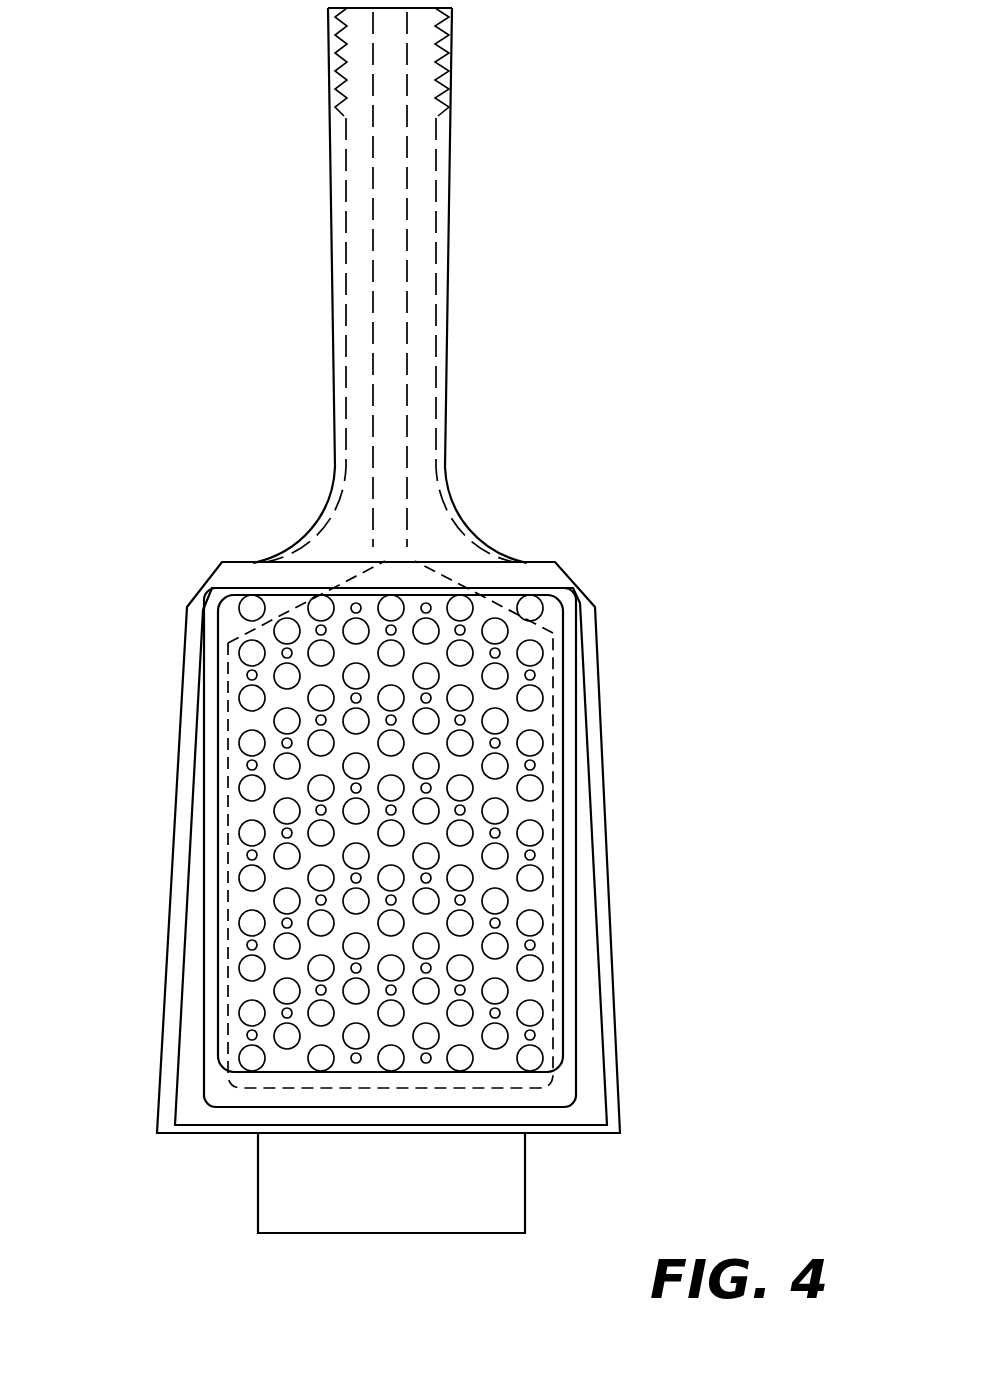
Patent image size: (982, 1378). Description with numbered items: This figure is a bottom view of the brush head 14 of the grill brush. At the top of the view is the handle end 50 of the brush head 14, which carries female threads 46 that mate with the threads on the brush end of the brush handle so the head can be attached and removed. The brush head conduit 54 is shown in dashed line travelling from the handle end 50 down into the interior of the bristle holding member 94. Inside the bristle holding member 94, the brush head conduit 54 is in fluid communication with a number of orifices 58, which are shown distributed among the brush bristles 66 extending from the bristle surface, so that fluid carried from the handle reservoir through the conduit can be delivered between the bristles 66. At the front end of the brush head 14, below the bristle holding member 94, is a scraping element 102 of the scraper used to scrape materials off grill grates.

The brush head 14 is at (470, 528).
The female threads 46 is at (337, 52).
The handle end 50 is at (420, 0).
The brush head conduit 54 is at (393, 291).
The orifices 58 is at (460, 990).
The brush bristles 66 is at (493, 858).
The bristle holding member 94 is at (188, 1068).
The scraping element 102 is at (510, 1200).